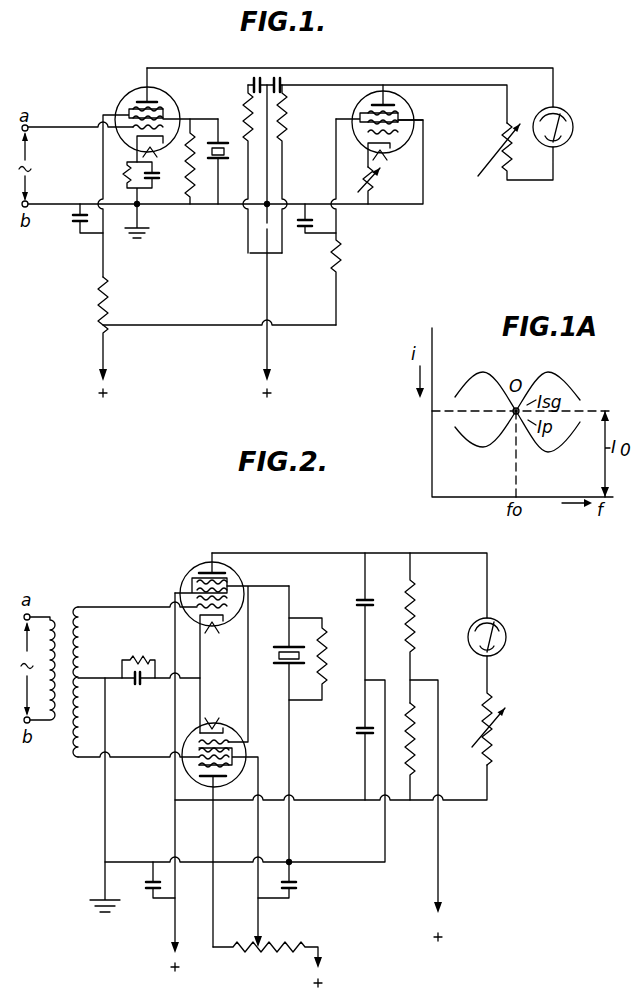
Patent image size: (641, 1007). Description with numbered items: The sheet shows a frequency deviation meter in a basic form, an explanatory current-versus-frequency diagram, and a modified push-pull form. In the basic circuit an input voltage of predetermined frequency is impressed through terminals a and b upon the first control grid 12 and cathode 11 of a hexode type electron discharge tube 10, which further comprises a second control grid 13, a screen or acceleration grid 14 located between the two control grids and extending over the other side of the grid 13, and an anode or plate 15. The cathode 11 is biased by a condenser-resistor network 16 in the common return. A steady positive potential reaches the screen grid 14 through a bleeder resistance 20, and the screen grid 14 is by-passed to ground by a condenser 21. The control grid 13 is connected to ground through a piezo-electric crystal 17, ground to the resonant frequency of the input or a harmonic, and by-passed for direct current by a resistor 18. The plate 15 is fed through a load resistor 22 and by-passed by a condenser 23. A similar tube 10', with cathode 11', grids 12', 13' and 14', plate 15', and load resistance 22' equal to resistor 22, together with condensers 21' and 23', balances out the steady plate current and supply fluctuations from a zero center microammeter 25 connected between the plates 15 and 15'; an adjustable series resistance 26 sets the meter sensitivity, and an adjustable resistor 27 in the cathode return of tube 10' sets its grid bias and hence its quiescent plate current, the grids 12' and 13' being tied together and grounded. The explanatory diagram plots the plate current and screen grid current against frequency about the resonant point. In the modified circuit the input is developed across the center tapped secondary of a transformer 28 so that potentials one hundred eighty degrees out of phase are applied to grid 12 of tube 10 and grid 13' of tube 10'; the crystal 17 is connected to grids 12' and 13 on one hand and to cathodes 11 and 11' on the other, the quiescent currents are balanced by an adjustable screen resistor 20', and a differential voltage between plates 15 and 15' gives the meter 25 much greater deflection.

In FIG. 1, the hexode type electron discharge tube 10 is at (159, 118).
In FIG. 2, the hexode type electron discharge tube 10 is at (226, 593).
In FIG. 1, the cathode 11 is at (160, 154).
In FIG. 2, the cathode 11 is at (223, 674).
In FIG. 1, the first control grid 12 is at (134, 149).
In FIG. 2, the first control grid 12 is at (238, 606).
In FIG. 1, the second control grid 13 is at (175, 109).
In FIG. 2, the second control grid 13 is at (189, 563).
In FIG. 1, the screen or acceleration grid 14 is at (127, 179).
In FIG. 2, the screen or acceleration grid 14 is at (185, 582).
In FIG. 1, the anode or plate 15 is at (136, 80).
In FIG. 2, the anode or plate 15 is at (205, 552).
In FIG. 1, the condenser-resistor network 16 is at (145, 172).
In FIG. 2, the condenser-resistor network 16 is at (140, 680).
In FIG. 1, the piezo-electric crystal 17 is at (220, 160).
In FIG. 2, the piezo-electric crystal 17 is at (286, 666).
In FIG. 1, the resistor 18 is at (192, 176).
In FIG. 2, the resistor 18 is at (325, 656).
In FIG. 1, the voltage drop or bleeder resistance 20 is at (118, 337).
In FIG. 1, the condenser 21 is at (76, 230).
In FIG. 2, the condenser 21 is at (151, 896).
In FIG. 1, the load resistor 22 is at (232, 168).
In FIG. 2, the load resistor 22 is at (426, 628).
In FIG. 1, the condenser 23 is at (247, 69).
In FIG. 2, the condenser 23 is at (379, 676).
In FIG. 1, the meter 25 is at (573, 127).
In FIG. 2, the meter 25 is at (506, 637).
In FIG. 1, the adjustable series resistance 26 is at (505, 157).
In FIG. 2, the adjustable series resistance 26 is at (492, 745).
In FIG. 1, the adjustable resistor 27 is at (373, 180).
In FIG. 2, the transformer 28 is at (68, 613).
In FIG. 1, the electron discharge tube 10' is at (399, 122).
In FIG. 2, the electron discharge tube 10' is at (234, 755).
In FIG. 1, the cathode 11' is at (397, 158).
In FIG. 2, the cathode 11' is at (226, 713).
In FIG. 1, the first control grid 12' is at (420, 126).
In FIG. 2, the first control grid 12' is at (240, 727).
In FIG. 1, the second control grid 13' is at (412, 80).
In FIG. 2, the second control grid 13' is at (205, 788).
In FIG. 1, the screen grid 14' is at (371, 108).
In FIG. 2, the screen grid 14' is at (245, 847).
In FIG. 1, the plate 15' is at (374, 75).
In FIG. 2, the plate 15' is at (227, 861).
In FIG. 1, the adjustable resistor 20' is at (355, 222).
In FIG. 2, the adjustable resistor 20' is at (267, 966).
In FIG. 1, the condenser 21' is at (311, 230).
In FIG. 2, the condenser 21' is at (293, 891).
In FIG. 1, the plate resistance 22' is at (299, 169).
In FIG. 2, the plate resistance 22' is at (423, 751).
In FIG. 1, the condenser 23' is at (302, 68).
In FIG. 2, the condenser 23' is at (353, 749).